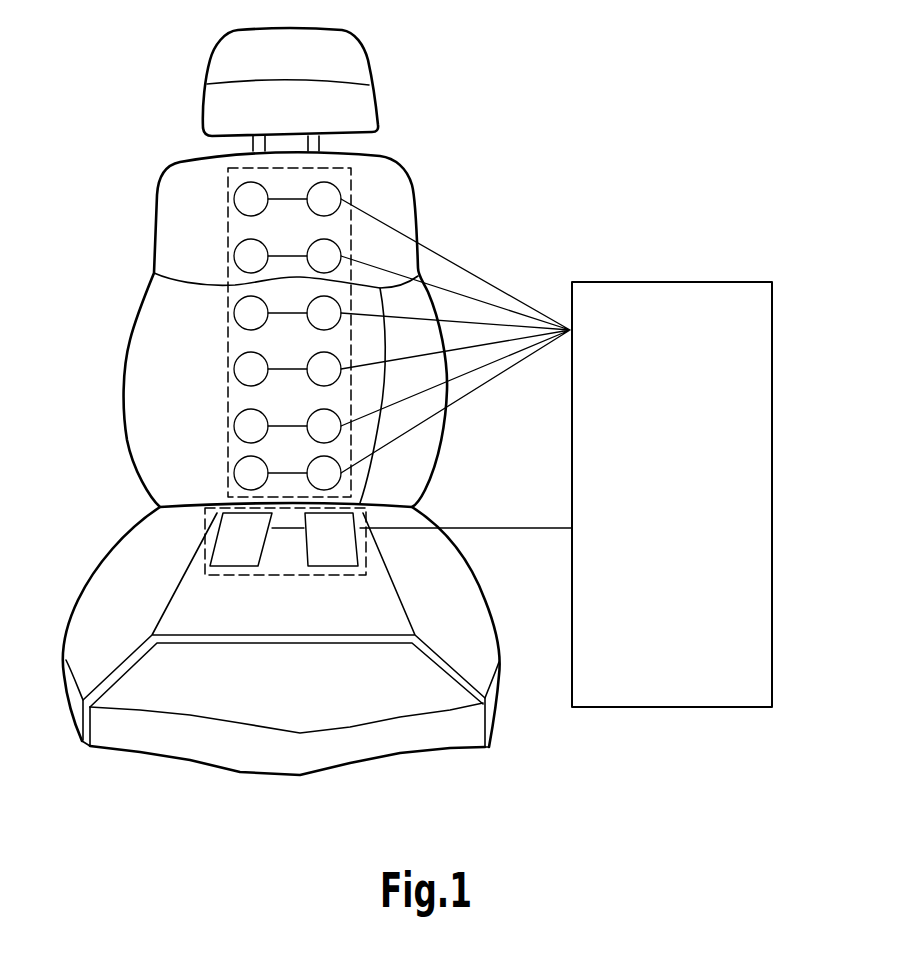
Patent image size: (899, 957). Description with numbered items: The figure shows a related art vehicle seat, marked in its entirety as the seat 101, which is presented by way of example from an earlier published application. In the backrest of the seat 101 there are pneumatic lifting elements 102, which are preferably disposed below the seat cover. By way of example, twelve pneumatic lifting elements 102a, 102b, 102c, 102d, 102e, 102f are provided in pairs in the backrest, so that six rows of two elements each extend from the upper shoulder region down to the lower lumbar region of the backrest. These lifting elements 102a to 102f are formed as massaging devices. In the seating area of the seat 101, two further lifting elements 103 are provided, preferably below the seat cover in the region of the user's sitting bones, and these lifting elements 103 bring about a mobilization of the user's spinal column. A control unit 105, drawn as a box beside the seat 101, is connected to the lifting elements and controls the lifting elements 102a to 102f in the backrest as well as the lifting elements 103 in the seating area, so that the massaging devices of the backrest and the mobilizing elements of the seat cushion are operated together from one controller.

The vehicle seat 101 is at (140, 130).
The pneumatic lifting elements 102 is at (325, 332).
The pneumatic lifting element 102a is at (257, 199).
The pneumatic lifting element 102b is at (257, 256).
The pneumatic lifting element 102c is at (257, 313).
The pneumatic lifting element 102d is at (257, 369).
The pneumatic lifting element 102e is at (257, 426).
The pneumatic lifting element 102f is at (257, 473).
The lifting elements 103 is at (270, 578).
The control unit 105 is at (690, 545).